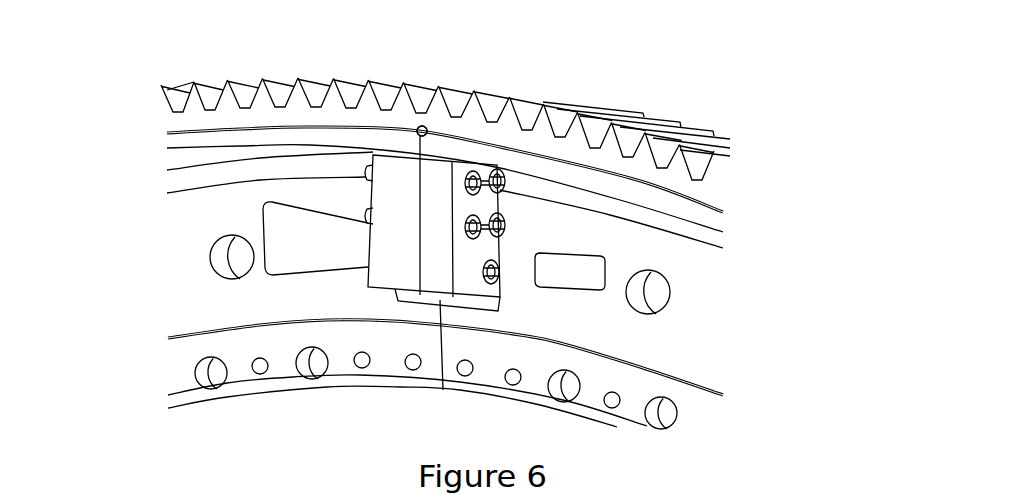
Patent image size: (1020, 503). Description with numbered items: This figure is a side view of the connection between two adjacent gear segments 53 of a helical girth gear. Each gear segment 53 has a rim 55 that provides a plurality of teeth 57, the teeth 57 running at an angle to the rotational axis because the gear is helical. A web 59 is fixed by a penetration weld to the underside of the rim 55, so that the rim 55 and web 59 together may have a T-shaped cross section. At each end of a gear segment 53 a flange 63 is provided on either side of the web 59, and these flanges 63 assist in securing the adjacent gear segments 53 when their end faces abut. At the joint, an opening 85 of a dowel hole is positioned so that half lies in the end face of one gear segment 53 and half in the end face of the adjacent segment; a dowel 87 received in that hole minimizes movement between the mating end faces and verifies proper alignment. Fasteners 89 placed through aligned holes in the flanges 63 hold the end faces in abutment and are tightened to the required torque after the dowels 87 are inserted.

The gear segment 53 is at (193, 117).
The rim 55 is at (193, 138).
The teeth 57 is at (704, 138).
The web 59 is at (190, 298).
The flange 63 is at (437, 263).
The opening 85 is at (420, 120).
The dowel 87 is at (428, 128).
The fasteners 89 is at (508, 188).